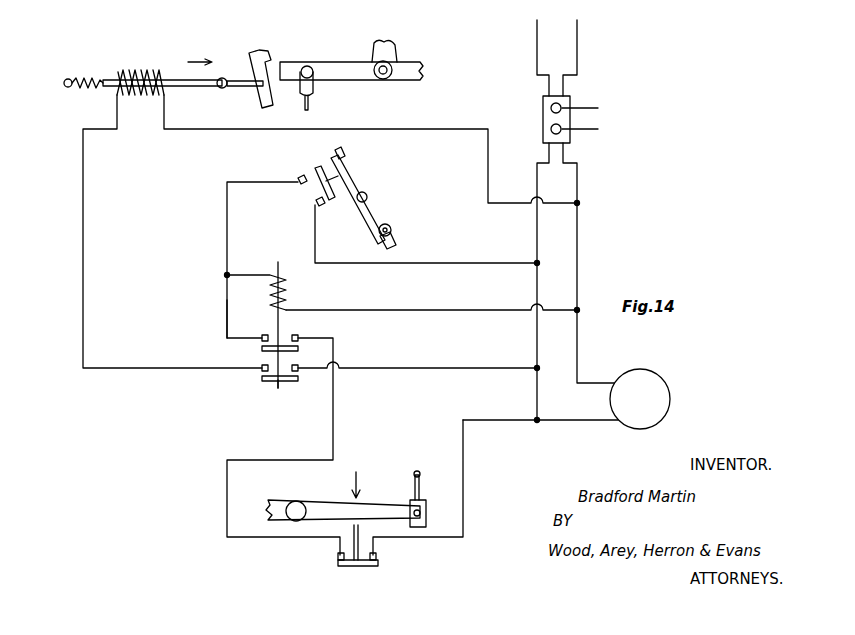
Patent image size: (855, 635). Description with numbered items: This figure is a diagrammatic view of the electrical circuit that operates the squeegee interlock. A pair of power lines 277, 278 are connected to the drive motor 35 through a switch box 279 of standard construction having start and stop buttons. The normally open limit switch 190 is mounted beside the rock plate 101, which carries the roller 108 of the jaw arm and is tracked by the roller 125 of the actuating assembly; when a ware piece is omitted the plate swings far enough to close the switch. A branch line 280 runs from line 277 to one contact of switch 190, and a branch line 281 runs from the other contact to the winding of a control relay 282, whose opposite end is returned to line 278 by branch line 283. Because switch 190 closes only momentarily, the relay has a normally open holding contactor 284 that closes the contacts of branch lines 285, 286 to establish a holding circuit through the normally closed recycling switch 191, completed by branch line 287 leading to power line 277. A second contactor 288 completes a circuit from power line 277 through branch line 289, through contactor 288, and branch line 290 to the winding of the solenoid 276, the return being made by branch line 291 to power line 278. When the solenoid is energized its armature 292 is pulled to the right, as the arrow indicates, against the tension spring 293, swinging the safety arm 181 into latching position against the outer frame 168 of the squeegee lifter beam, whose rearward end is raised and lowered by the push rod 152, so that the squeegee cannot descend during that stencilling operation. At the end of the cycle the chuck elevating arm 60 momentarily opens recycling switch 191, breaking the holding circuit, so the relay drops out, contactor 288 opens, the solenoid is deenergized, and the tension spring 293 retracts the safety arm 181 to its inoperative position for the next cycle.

The drive motor 35 is at (668, 414).
The chuck elevating arm 60 is at (320, 504).
The rock plate 101 is at (372, 215).
The roller 108 is at (392, 228).
The roller 125 is at (345, 153).
The push rod 152 is at (313, 100).
The outer frame 168 is at (326, 70).
The safety arm 181 is at (259, 50).
The limit switch 190 is at (316, 168).
The recycling switch 191 is at (356, 566).
The solenoid 276 is at (163, 90).
The power line 277 is at (537, 42).
The power line 278 is at (577, 40).
The switch box 279 is at (566, 98).
The branch line 280 is at (467, 263).
The branch line 281 is at (227, 231).
The control relay 282 is at (286, 288).
The branch line 283 is at (436, 310).
The holding contactor 284 is at (262, 350).
The branch line 285 is at (227, 312).
The branch line 286 is at (333, 405).
The branch line 287 is at (463, 454).
The second contactor 288 is at (278, 388).
The branch line 289 is at (430, 368).
The branch line 290 is at (83, 270).
The branch line 291 is at (400, 129).
The solenoid armature 292 is at (118, 72).
The tension spring 293 is at (72, 88).